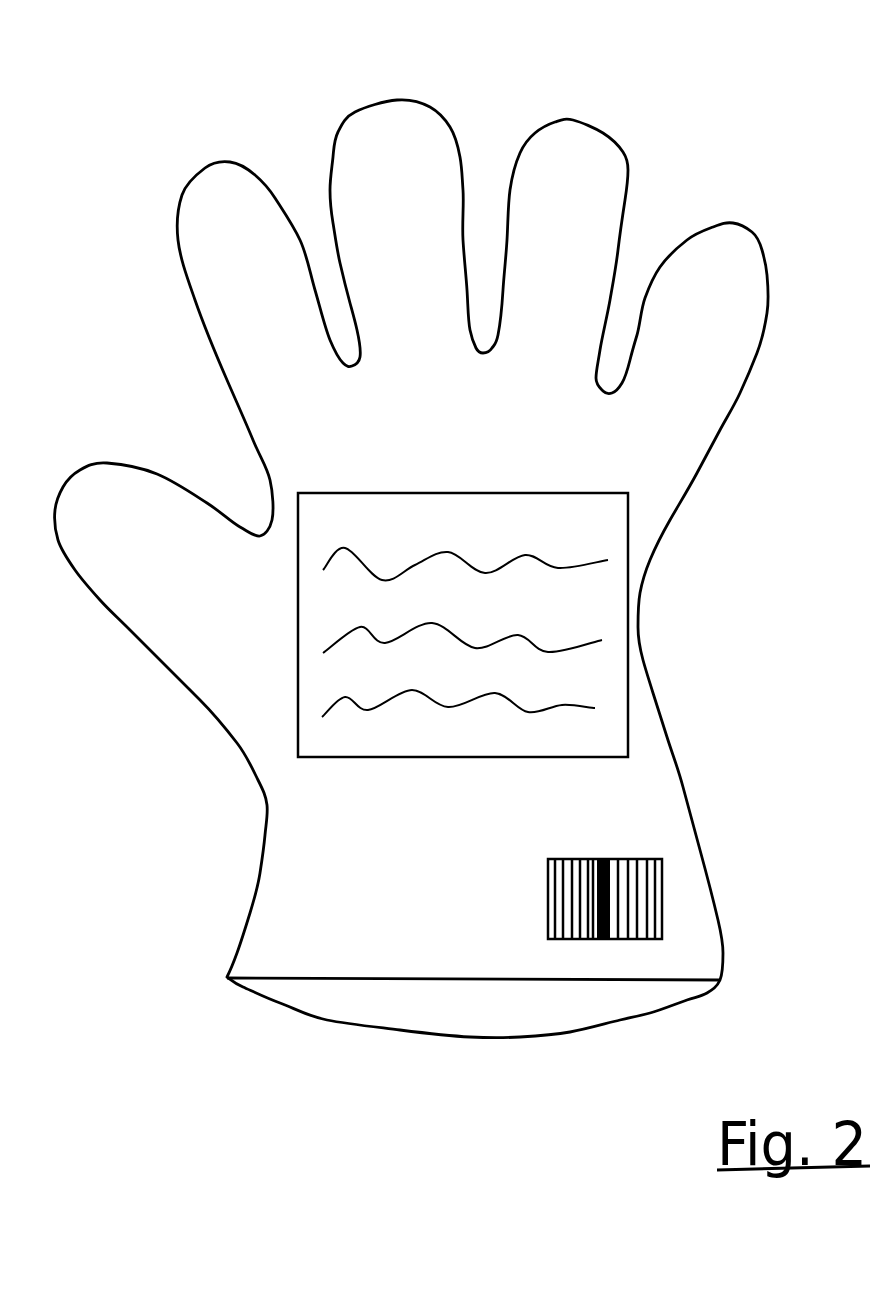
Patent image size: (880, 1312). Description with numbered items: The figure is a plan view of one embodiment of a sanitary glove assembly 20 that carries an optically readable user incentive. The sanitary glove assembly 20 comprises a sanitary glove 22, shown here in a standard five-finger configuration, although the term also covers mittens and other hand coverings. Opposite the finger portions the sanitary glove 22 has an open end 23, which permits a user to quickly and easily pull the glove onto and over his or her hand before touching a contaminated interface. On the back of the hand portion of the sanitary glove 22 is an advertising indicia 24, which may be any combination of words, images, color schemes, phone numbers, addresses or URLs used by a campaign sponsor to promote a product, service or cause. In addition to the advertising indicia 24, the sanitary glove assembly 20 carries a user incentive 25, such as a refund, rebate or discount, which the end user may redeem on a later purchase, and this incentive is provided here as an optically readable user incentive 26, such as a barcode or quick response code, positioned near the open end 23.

The sanitary glove assembly 20 is at (454, 572).
The sanitary glove 22 is at (740, 402).
The open end 23 is at (447, 1013).
The advertising indicia 24 is at (623, 623).
The user incentive 25 is at (645, 858).
The optically readable user incentive 26 is at (663, 897).